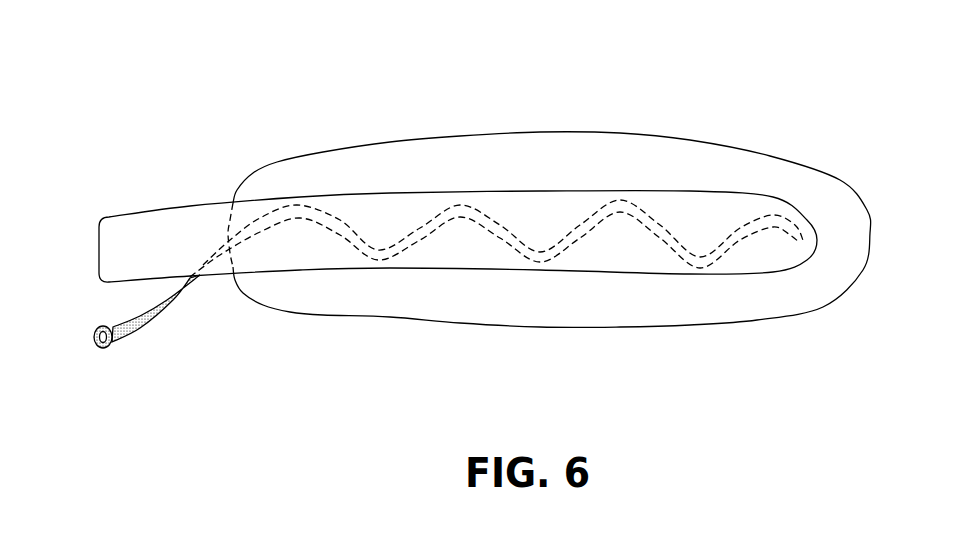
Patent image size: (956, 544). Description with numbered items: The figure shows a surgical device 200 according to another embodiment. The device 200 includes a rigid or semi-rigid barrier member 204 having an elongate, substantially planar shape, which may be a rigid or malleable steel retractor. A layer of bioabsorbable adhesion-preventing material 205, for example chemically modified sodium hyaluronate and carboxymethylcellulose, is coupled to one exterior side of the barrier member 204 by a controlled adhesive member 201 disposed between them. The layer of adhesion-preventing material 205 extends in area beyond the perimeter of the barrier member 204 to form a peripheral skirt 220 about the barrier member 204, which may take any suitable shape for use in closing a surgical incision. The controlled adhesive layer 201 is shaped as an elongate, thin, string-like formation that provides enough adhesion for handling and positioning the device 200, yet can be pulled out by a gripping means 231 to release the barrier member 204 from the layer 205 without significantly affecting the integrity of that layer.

The surgical device 200 is at (258, 97).
The controlled adhesive member 201 is at (435, 217).
The barrier member 204 is at (563, 190).
The layer of bioabsorbable adhesion-preventing material 205 is at (737, 300).
The peripheral skirt 220 is at (843, 237).
The gripping means 231 is at (110, 347).